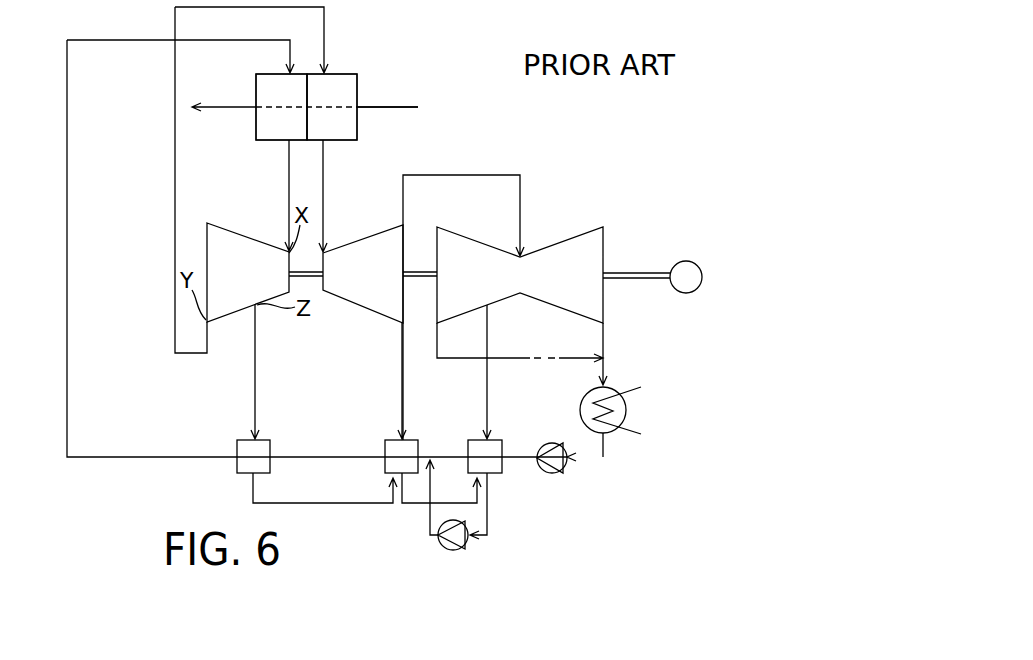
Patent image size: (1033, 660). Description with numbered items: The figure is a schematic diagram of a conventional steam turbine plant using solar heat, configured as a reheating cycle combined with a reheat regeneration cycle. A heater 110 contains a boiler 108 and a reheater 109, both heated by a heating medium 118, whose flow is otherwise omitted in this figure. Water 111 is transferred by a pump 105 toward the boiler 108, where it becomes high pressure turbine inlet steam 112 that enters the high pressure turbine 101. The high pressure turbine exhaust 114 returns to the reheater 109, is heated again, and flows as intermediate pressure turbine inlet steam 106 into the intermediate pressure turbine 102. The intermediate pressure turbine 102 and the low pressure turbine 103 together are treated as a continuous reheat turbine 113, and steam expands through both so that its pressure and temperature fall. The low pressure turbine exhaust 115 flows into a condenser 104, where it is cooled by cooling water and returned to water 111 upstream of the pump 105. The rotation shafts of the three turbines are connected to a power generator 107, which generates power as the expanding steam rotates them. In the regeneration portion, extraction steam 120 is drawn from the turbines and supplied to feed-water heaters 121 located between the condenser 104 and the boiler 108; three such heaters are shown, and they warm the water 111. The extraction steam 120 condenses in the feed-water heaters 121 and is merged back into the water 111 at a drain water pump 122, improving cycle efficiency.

The high pressure turbine 101 is at (233, 313).
The intermediate pressure turbine 102 is at (388, 228).
The low pressure turbine 103 is at (573, 238).
The condenser 104 is at (614, 434).
The pump 105 is at (552, 443).
The intermediate pressure turbine inlet steam 106 is at (323, 177).
The power generator 107 is at (683, 261).
The boiler 108 is at (257, 123).
The reheater 109 is at (340, 141).
The heater 110 is at (244, 138).
The water 111 is at (590, 460).
The steam 112 is at (289, 204).
The reheat turbine 113 is at (537, 228).
The high pressure turbine exhaust 114 is at (173, 305).
The low pressure turbine exhaust 115 is at (530, 357).
The heating medium 118 is at (397, 107).
The extraction steam 120 is at (257, 355).
The feed-water heater 121 is at (267, 438).
The drain water pump 122 is at (455, 551).